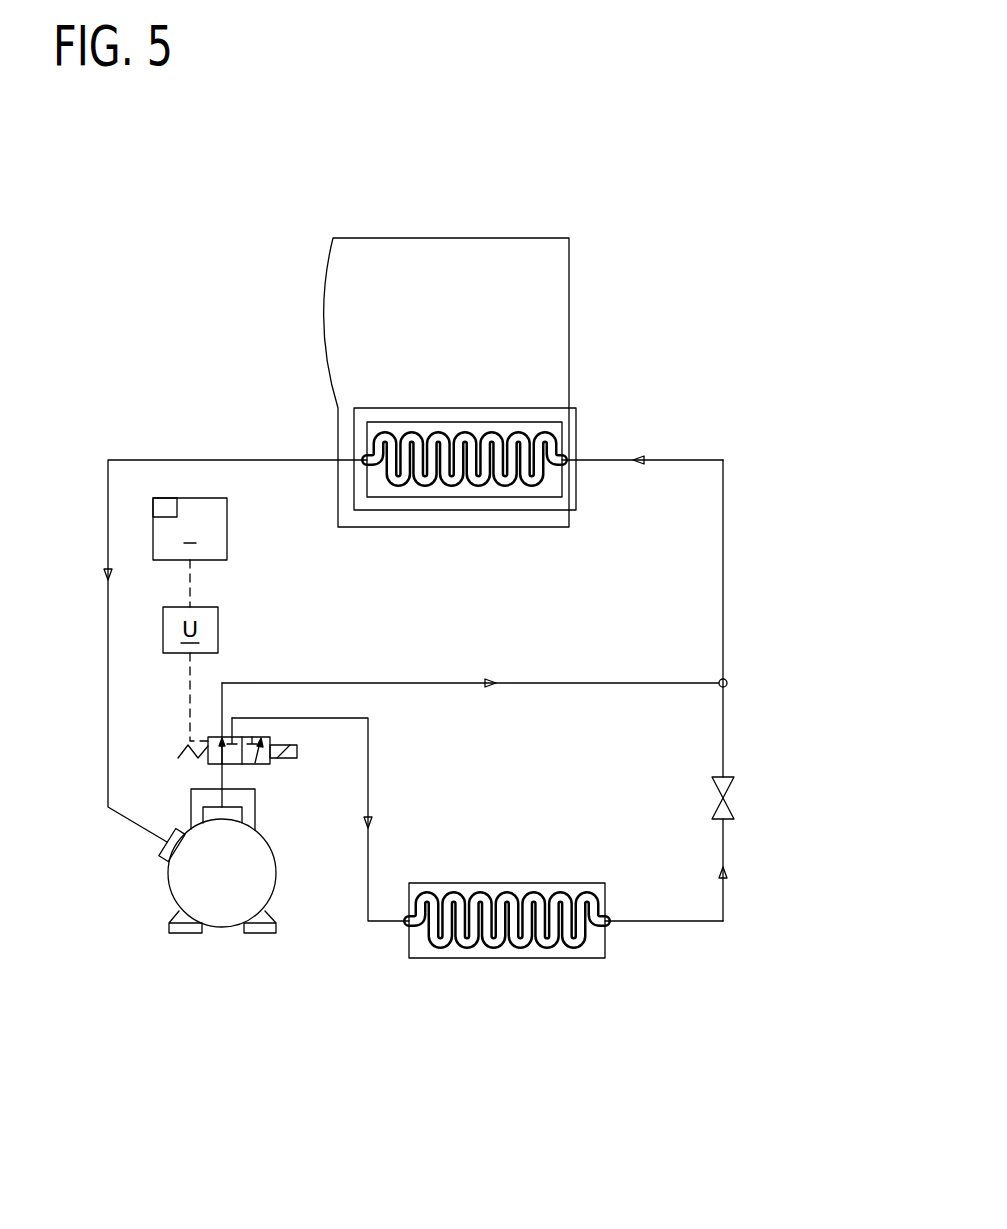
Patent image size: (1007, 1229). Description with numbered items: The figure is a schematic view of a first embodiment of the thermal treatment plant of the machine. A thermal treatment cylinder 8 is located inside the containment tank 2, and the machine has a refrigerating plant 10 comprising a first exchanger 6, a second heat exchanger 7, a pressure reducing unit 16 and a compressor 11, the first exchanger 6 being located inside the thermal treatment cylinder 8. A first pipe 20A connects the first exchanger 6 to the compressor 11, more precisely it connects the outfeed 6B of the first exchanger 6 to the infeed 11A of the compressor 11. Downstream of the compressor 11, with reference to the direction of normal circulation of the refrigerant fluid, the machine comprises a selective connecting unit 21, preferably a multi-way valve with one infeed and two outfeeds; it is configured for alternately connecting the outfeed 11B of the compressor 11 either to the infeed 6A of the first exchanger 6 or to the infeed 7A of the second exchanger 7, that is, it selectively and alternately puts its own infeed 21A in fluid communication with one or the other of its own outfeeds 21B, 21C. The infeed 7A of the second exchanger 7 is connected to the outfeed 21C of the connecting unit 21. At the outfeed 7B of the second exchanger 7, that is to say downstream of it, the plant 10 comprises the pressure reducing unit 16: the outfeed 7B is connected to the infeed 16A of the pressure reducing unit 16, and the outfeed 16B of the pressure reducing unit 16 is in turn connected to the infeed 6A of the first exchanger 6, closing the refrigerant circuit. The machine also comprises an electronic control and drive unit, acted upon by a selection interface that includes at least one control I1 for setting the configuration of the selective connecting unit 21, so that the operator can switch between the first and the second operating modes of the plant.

The containment tank 2 is at (312, 294).
The first exchanger 6 is at (514, 408).
The infeed of the first exchanger 6A is at (600, 480).
The outfeed of the first exchanger 6B is at (305, 444).
The thermal treatment cylinder 8 is at (478, 524).
The refrigerating plant 10 is at (731, 412).
The control of the selection interface I1 is at (158, 482).
The first pipe 20A is at (108, 634).
The compressor 11 is at (148, 891).
The infeed of the compressor 11A is at (143, 849).
The outfeed of the compressor 11B is at (206, 778).
The selective connecting unit 21 is at (302, 777).
The infeed of the selective connecting unit 21A is at (245, 775).
The first outfeed of the selective connecting unit 21B is at (240, 727).
The second outfeed of the selective connecting unit 21C is at (272, 724).
The pressure reducing unit 16 is at (745, 797).
The infeed of the pressure reducing unit 16A is at (746, 836).
The outfeed of the pressure reducing unit 16B is at (744, 741).
The second heat exchanger 7 is at (518, 980).
The infeed of the second exchanger 7A is at (383, 942).
The outfeed of the second exchanger 7B is at (628, 941).